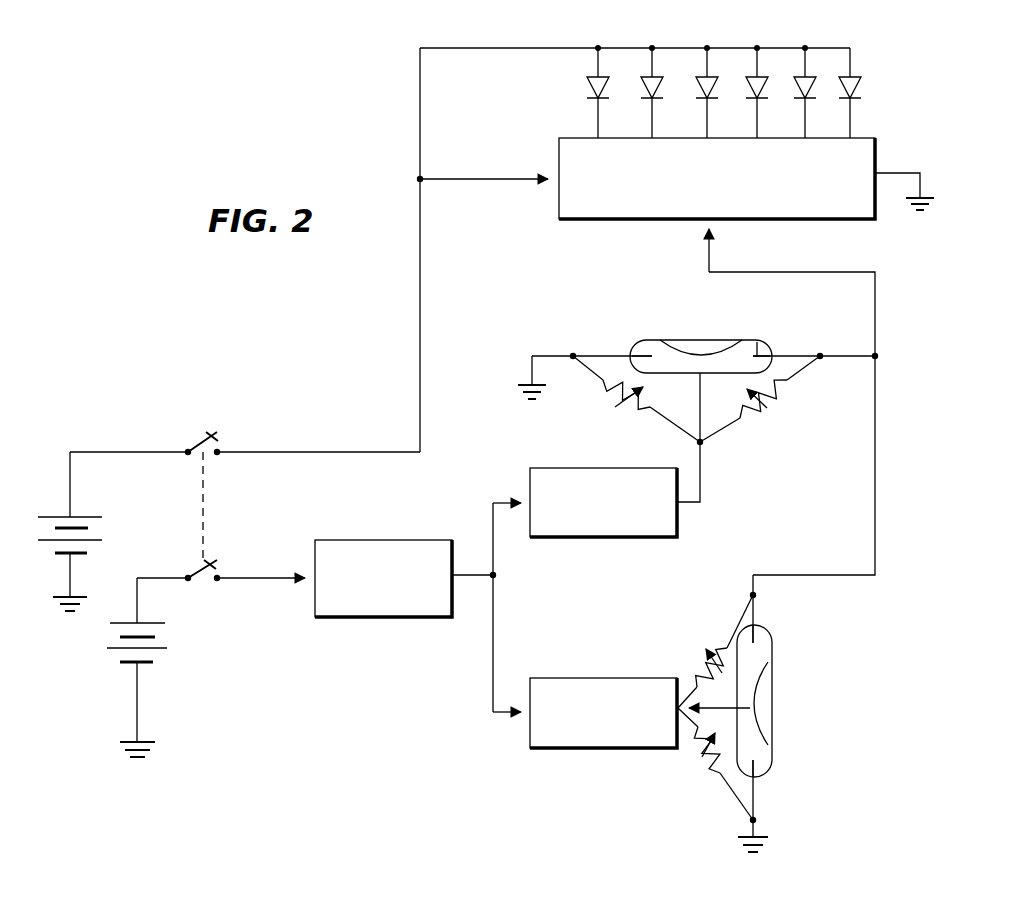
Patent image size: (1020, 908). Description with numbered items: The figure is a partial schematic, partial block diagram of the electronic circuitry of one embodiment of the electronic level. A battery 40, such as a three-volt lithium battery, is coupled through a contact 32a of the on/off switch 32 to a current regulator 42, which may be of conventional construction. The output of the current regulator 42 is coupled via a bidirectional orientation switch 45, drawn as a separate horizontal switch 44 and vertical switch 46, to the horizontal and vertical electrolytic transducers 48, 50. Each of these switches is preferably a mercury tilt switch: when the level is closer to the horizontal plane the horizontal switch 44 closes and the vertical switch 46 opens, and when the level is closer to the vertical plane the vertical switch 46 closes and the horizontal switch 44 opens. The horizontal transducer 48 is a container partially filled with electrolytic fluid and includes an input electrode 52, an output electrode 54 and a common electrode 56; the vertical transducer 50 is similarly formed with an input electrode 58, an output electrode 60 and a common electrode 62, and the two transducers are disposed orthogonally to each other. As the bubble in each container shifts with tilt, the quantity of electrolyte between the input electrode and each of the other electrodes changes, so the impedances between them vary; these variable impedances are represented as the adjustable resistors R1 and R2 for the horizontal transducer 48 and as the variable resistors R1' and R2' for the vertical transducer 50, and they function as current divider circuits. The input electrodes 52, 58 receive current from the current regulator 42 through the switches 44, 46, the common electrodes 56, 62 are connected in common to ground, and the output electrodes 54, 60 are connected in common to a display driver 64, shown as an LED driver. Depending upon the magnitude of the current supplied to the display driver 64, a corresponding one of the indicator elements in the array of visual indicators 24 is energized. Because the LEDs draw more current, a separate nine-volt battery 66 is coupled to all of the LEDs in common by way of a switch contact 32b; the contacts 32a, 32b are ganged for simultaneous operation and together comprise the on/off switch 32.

The visual indicators 24 is at (666, 35).
The display driver 64 is at (763, 220).
The battery 66 is at (90, 530).
The battery 40 is at (160, 637).
The on/off switch 32 is at (227, 494).
The contact 32a is at (215, 566).
The switch contact 32b is at (191, 431).
The current regulator 42 is at (349, 610).
The horizontal switch 44 is at (562, 537).
The bidirectional orientation switch 45 is at (600, 631).
The vertical switch 46 is at (556, 748).
The horizontal electrolytic transducer 48 is at (641, 340).
The input electrode 52 is at (697, 364).
The output electrode 54 is at (757, 342).
The common electrode 56 is at (640, 355).
The vertical electrolytic transducer 50 is at (772, 647).
The input electrode 58 is at (745, 706).
The output electrode 60 is at (757, 640).
The common electrode 62 is at (772, 768).
The adjustable resistor R1 is at (636, 399).
The adjustable resistor R2 is at (765, 399).
The variable resistor R1' is at (715, 764).
The variable resistor R2' is at (698, 651).